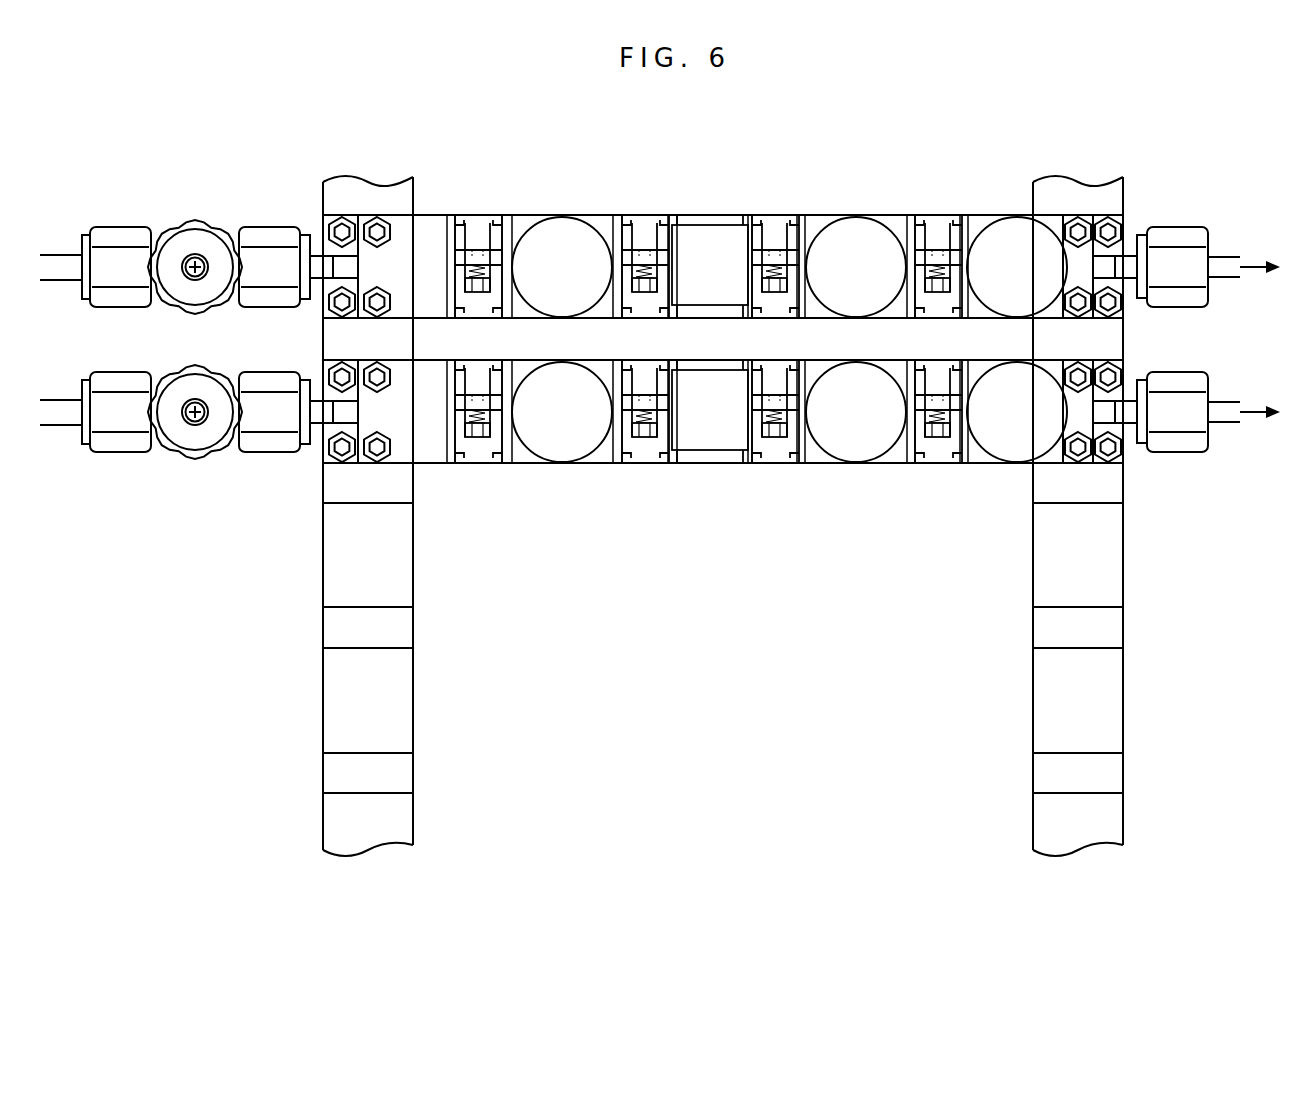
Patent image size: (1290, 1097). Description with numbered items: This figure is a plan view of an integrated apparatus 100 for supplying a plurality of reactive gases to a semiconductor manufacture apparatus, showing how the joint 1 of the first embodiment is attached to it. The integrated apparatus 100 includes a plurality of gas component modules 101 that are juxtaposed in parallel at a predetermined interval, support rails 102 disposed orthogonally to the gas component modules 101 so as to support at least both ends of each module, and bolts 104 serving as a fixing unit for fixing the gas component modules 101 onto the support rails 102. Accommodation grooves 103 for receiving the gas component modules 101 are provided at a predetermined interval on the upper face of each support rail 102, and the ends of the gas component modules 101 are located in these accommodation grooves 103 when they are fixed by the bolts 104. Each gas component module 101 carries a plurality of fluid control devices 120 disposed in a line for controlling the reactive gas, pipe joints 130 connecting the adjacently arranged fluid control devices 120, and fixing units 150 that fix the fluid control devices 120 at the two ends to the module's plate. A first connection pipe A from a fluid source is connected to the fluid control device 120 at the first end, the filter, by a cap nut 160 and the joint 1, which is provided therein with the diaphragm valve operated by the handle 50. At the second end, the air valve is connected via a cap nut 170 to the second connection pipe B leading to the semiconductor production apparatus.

The joint 1 is at (175, 327).
The handwheel 50 is at (193, 220).
The integrated apparatus 100 is at (723, 467).
The gas component module 101 is at (738, 134).
The support rail 102 is at (413, 827).
The accommodation groove 103 is at (413, 552).
The bolt 104 is at (330, 222).
The fluid control device 120 is at (565, 225).
The pipe joint 130 is at (486, 215).
The fixing unit 150 is at (378, 220).
The cap nut 160 is at (122, 226).
The cap nut 170 is at (1190, 228).
The first connection pipe A is at (57, 254).
The second connection pipe B is at (1233, 256).